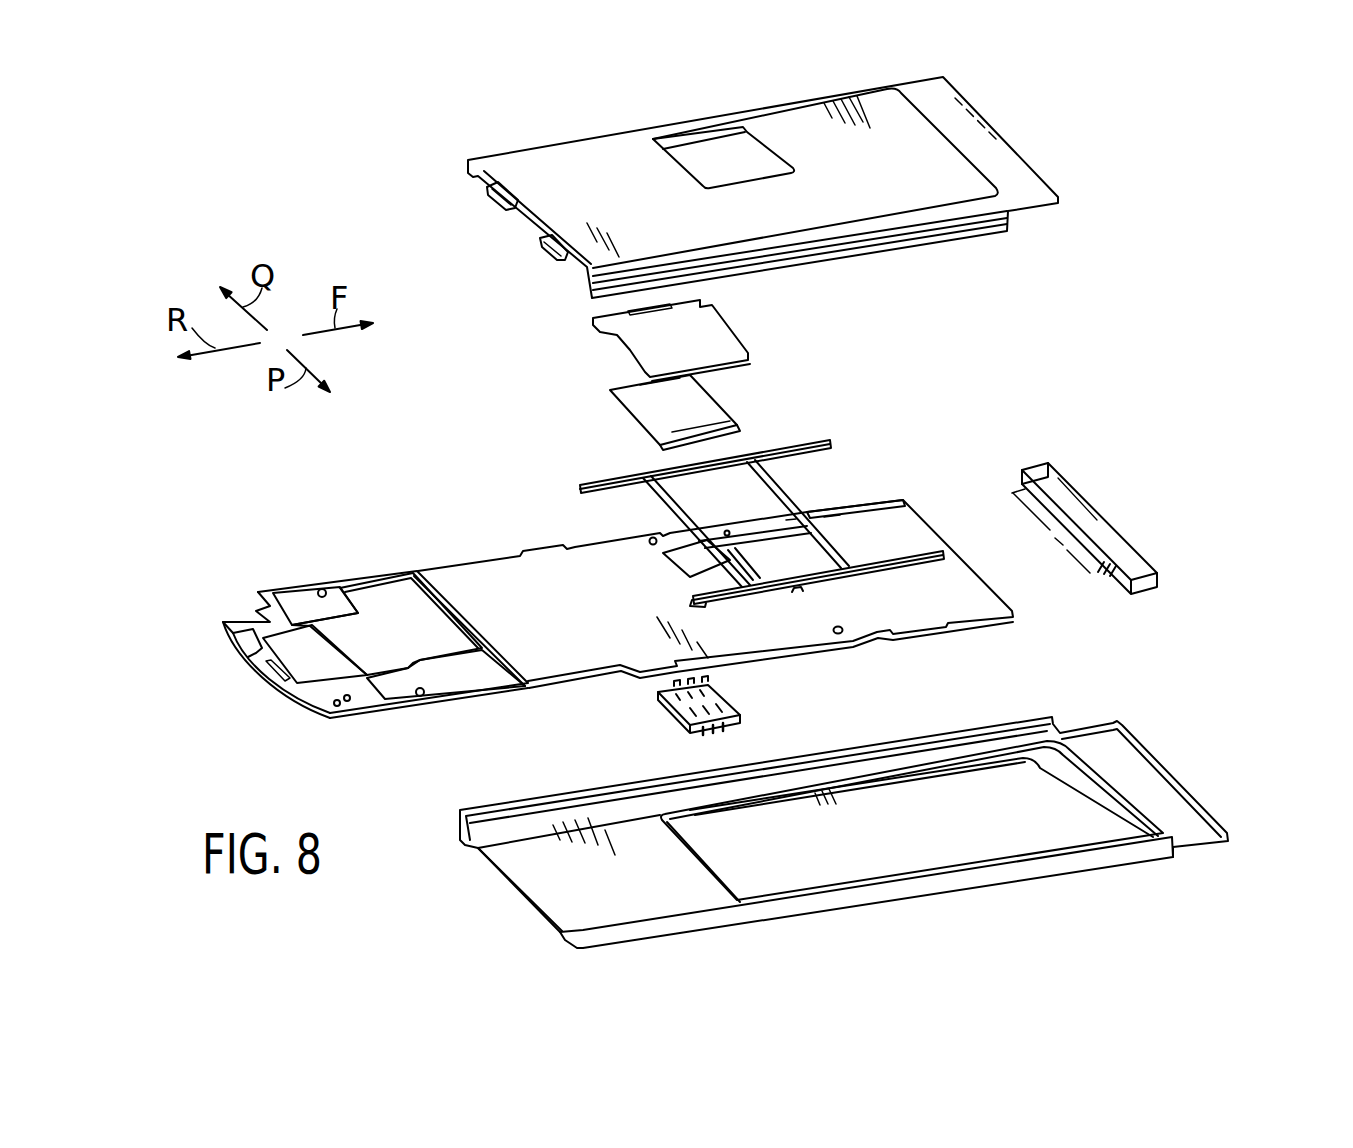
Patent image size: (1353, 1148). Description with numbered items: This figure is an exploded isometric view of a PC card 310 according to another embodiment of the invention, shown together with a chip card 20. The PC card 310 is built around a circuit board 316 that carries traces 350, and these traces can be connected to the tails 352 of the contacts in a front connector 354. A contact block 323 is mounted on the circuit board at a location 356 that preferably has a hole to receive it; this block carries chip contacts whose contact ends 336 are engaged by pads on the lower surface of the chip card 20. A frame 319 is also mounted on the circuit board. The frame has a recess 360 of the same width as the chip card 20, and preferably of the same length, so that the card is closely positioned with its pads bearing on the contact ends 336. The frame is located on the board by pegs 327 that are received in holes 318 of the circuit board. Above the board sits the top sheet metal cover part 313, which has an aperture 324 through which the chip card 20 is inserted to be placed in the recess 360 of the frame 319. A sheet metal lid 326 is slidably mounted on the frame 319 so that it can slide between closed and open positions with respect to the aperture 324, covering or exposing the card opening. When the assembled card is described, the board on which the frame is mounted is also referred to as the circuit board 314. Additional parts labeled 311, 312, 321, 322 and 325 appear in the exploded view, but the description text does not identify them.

The chip card 20 is at (612, 410).
The PC card 310 is at (1085, 388).
The lower housing 311 is at (1217, 745).
The side rail of lower housing 312 is at (1231, 807).
The top sheet metal cover part 313 is at (478, 211).
The circuit board 314 is at (376, 545).
The circuit board 316 is at (500, 582).
The holes 318 is at (648, 540).
The frame 319 is at (833, 473).
The card holder frame 321 is at (851, 381).
The frame opening 322 is at (799, 555).
The contact block 323 is at (660, 699).
The aperture 324 is at (698, 158).
The upper guide rail 325 is at (745, 488).
The sheet metal lid 326 is at (612, 348).
The pegs 327 is at (797, 593).
The contact ends 336 is at (683, 697).
The traces 350 is at (858, 507).
The tails 352 is at (1105, 582).
The front connector 354 is at (1093, 510).
The location 356 is at (670, 567).
The recess 360 is at (683, 477).